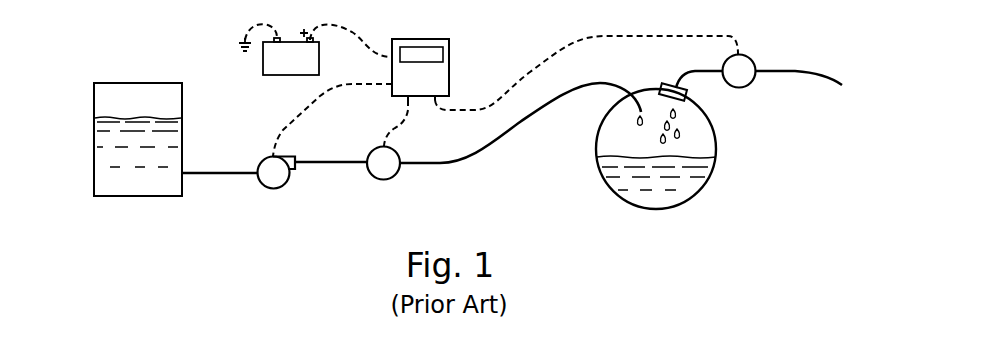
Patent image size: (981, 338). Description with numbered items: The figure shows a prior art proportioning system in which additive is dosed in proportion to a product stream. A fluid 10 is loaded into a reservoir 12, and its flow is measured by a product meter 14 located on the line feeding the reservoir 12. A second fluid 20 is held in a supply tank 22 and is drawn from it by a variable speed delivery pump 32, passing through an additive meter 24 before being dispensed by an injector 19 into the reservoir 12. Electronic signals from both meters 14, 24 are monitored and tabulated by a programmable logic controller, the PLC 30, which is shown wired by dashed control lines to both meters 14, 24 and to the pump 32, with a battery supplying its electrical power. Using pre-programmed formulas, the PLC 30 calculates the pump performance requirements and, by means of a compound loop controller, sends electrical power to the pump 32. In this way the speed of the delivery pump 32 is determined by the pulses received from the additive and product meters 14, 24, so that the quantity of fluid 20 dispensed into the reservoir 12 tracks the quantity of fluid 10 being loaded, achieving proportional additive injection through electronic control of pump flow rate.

The fluid 10 is at (685, 134).
The reservoir 12 is at (712, 176).
The meter 14 is at (755, 62).
The spray nozzle 19 is at (688, 95).
The fluid 20 is at (115, 158).
The reservoir tank 22 is at (94, 104).
The meter 24 is at (397, 178).
The PLC 30 is at (450, 45).
The variable speed pump 32 is at (258, 184).